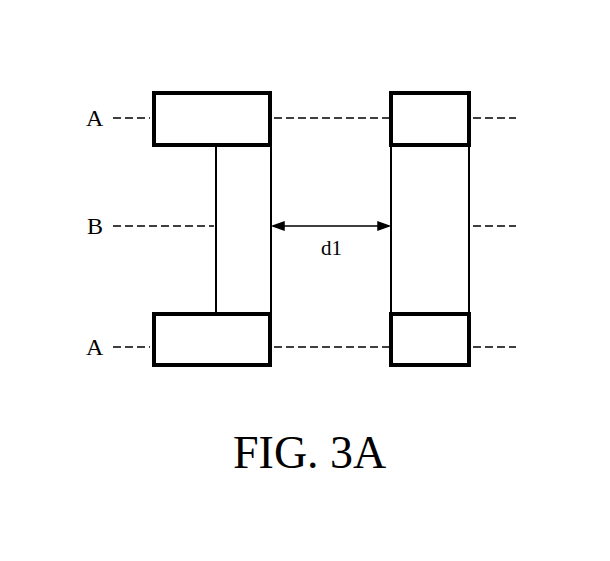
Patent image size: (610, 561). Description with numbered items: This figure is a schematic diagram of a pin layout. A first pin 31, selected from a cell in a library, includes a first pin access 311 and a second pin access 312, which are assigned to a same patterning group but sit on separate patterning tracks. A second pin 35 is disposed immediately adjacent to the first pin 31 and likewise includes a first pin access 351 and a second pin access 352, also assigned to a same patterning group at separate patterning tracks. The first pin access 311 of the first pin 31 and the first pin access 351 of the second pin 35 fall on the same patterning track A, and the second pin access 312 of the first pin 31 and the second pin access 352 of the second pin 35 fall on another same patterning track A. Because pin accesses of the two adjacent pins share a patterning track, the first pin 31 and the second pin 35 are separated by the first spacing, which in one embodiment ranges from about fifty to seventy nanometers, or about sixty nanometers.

The first pin 31 is at (246, 201).
The first pin access 311 is at (233, 130).
The second pin access 312 is at (233, 349).
The second pin 35 is at (463, 201).
The first pin access 351 is at (449, 130).
The second pin access 352 is at (449, 349).